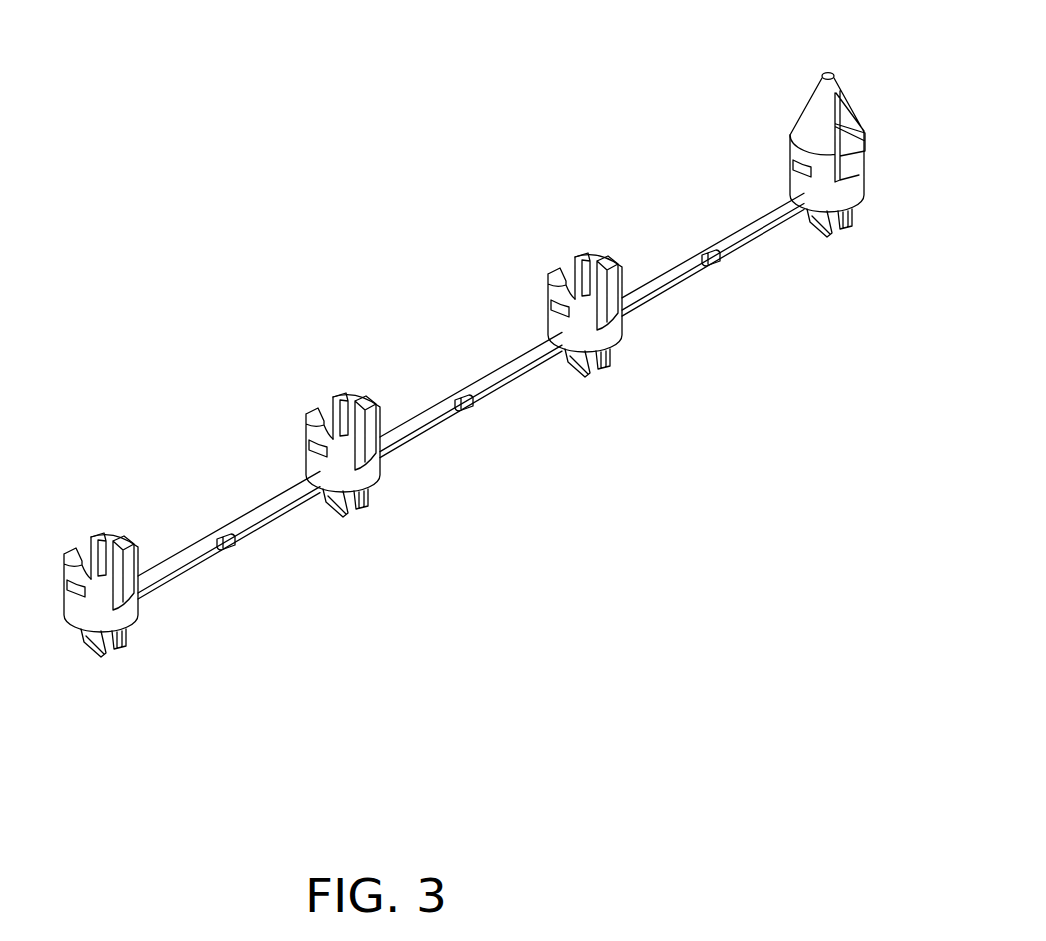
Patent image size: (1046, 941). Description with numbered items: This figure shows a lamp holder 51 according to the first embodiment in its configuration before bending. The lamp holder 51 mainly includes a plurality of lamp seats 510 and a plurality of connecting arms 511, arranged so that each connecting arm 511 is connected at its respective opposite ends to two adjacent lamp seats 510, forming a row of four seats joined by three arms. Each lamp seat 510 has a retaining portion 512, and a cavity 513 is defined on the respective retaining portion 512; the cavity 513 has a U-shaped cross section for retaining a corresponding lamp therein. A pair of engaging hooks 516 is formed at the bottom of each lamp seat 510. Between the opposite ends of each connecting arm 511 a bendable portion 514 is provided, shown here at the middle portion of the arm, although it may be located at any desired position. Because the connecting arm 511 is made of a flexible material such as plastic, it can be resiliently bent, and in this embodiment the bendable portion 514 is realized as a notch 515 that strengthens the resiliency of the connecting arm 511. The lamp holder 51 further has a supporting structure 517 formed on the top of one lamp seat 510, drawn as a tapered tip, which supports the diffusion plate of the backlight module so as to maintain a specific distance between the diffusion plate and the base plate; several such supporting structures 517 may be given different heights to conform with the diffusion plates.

The lamp holder 51 is at (434, 50).
The lamp seat 510 is at (570, 324).
The connecting arm 511 is at (533, 372).
The retaining portion 512 is at (372, 425).
The cavity 513 is at (628, 300).
The bendable portion 514 is at (466, 410).
The notch 515 is at (231, 550).
The engaging hook 516 is at (607, 364).
The supporting structure 517 is at (818, 118).